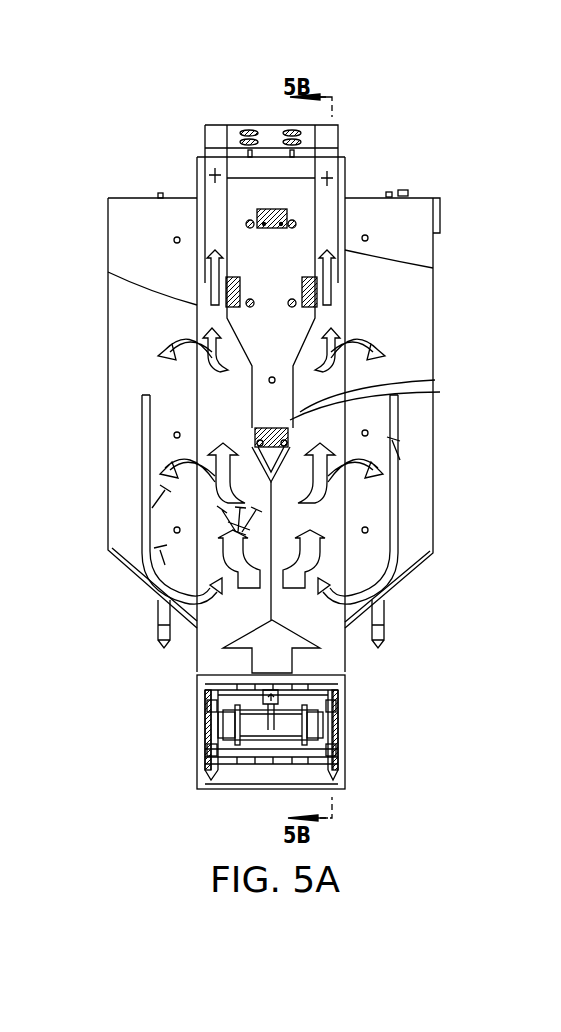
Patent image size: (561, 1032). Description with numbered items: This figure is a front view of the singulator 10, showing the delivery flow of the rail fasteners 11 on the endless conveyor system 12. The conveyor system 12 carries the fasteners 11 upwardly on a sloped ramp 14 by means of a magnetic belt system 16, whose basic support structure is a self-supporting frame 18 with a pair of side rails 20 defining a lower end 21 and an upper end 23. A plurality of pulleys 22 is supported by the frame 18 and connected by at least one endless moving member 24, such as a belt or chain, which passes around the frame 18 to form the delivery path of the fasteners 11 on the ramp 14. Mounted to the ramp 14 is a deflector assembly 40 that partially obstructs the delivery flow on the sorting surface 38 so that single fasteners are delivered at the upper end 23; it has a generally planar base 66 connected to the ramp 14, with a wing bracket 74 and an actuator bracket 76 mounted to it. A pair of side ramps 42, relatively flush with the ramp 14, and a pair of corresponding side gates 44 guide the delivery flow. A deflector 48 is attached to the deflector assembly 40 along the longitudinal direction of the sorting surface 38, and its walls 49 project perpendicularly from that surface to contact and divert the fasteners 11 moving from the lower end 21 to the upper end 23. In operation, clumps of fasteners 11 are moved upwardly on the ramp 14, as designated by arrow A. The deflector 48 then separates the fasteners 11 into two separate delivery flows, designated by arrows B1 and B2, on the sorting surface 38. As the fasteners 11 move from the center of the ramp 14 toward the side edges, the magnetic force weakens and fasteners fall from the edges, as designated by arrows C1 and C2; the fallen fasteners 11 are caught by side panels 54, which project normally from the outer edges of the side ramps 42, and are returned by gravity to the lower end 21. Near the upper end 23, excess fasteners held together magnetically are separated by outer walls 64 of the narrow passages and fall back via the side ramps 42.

The singulator 10 is at (470, 186).
The rail fasteners 11 is at (215, 172).
The endless conveyor system 12 is at (370, 669).
The sloped ramp 14 is at (228, 660).
The magnetic belt system 16 is at (153, 768).
The self-supporting frame 18 is at (345, 700).
The side rails 20 is at (150, 592).
The lower end 21 is at (312, 778).
The pulleys 22 is at (338, 770).
The upper end 23 is at (241, 166).
The endless moving member 24 is at (328, 740).
The sorting surface 38 is at (197, 622).
The deflector assembly 40 is at (443, 247).
The side ramps 42 is at (130, 215).
The side gates 44 is at (191, 204).
The deflector 48 is at (252, 412).
The walls 49 is at (440, 392).
The side panels 54 is at (97, 478).
The outer walls 64 is at (183, 228).
The base 66 is at (433, 395).
The wing bracket 74 is at (256, 430).
The actuator bracket 76 is at (275, 209).
The arrow A is at (271, 646).
The arrow B1 is at (338, 295).
The arrow B2 is at (210, 303).
The arrow C1 is at (388, 334).
The arrow C2 is at (162, 345).